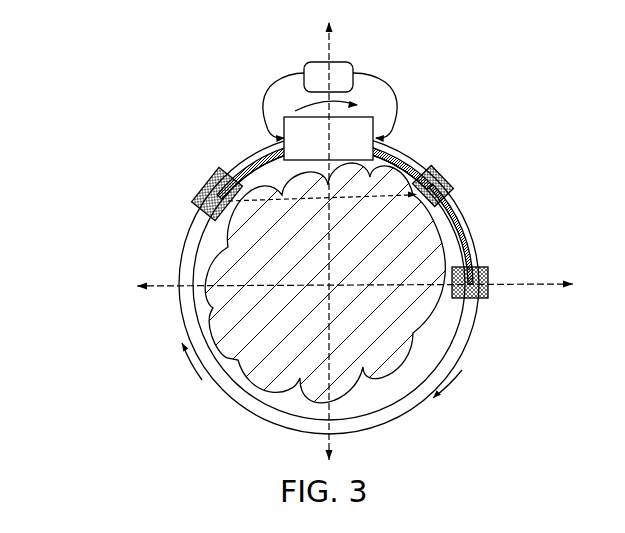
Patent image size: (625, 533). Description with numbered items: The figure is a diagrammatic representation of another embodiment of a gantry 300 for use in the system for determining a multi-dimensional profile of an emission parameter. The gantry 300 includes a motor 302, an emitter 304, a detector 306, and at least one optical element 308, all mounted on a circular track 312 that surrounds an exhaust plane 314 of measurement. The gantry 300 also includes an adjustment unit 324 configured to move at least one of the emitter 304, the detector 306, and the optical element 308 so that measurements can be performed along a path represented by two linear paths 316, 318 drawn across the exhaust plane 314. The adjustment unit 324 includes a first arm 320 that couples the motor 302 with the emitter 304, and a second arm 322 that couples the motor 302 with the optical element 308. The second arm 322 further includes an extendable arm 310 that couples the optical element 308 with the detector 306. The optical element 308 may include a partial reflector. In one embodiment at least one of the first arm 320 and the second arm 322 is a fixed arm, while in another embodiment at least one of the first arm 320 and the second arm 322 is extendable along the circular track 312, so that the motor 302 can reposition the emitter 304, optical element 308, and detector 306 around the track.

The gantry 300 is at (92, 76).
The motor 302 is at (272, 125).
The emitter 304 is at (200, 172).
The detector 306 is at (490, 296).
The optical element 308 is at (445, 170).
The extendable arm 310 is at (471, 230).
The circular track 312 is at (179, 263).
The exhaust plane 314 is at (290, 297).
The linear path 316 is at (296, 203).
The linear path 318 is at (428, 215).
The first arm 320 is at (248, 164).
The second arm 322 is at (406, 163).
The adjustment unit 324 is at (354, 68).